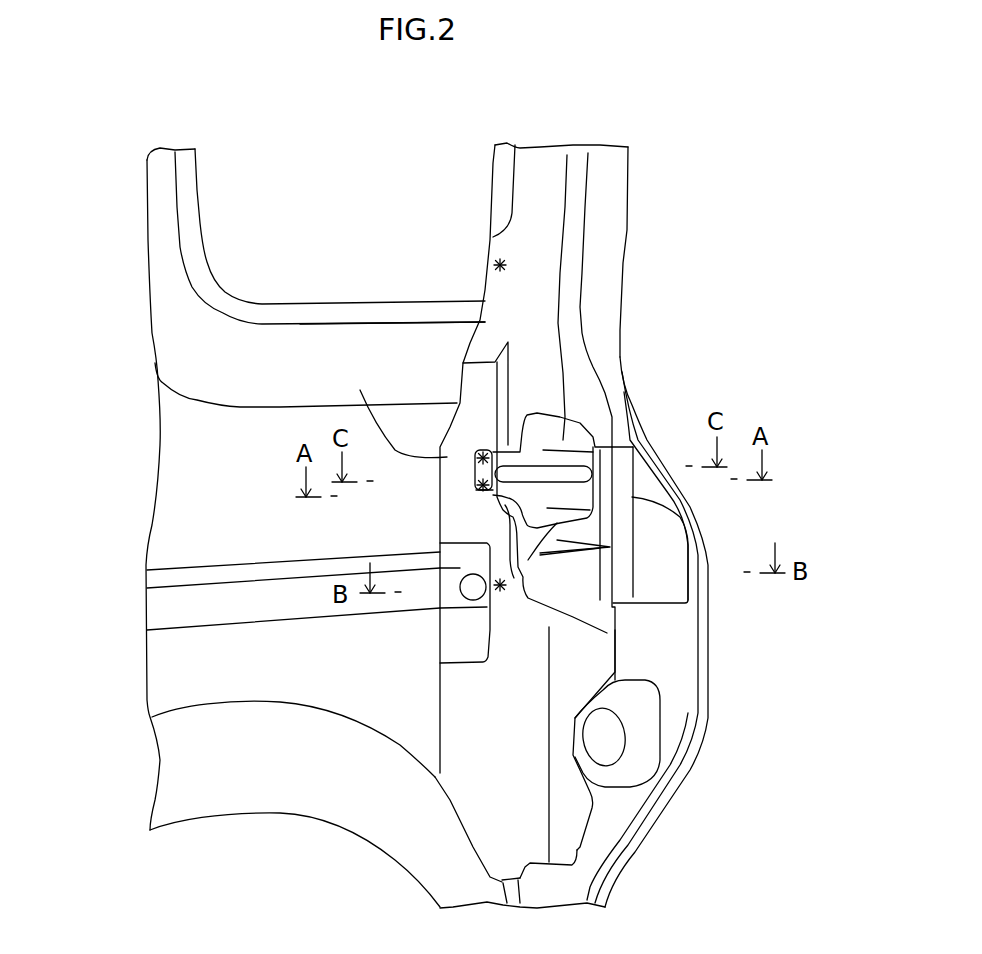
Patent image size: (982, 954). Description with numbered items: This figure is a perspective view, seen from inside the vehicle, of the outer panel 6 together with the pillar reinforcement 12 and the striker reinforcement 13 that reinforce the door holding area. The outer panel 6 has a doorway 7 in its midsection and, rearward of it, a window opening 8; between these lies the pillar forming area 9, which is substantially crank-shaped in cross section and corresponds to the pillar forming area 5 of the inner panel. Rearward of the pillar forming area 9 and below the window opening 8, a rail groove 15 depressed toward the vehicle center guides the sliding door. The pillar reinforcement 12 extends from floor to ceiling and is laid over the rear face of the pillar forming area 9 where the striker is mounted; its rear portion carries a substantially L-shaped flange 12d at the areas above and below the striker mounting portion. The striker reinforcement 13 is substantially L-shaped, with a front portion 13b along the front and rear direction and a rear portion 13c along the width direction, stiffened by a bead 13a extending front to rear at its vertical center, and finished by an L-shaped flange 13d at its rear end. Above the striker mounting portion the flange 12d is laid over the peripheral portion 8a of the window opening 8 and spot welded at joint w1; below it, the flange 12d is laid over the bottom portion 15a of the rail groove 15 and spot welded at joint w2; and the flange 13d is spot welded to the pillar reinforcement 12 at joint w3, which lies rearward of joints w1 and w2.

The pillar forming area 5 is at (550, 222).
The outer panel 6 is at (177, 470).
The doorway 7 is at (627, 192).
The window opening 8 is at (197, 180).
The peripheral portion of the window opening 8a is at (348, 312).
The pillar forming area 9 is at (658, 648).
The pillar reinforcement 12 is at (483, 798).
The flange 12d is at (363, 397).
The striker reinforcement 13 is at (573, 427).
The bead 13a is at (622, 443).
The front portion 13b is at (593, 487).
The rear portion 13c is at (505, 450).
The flange 13d is at (475, 493).
The rail groove 15 is at (160, 612).
The bottom portion of the rail groove 15a is at (247, 613).
The joint w1 is at (494, 265).
The joint w2 is at (500, 592).
The joint w3 is at (477, 487).